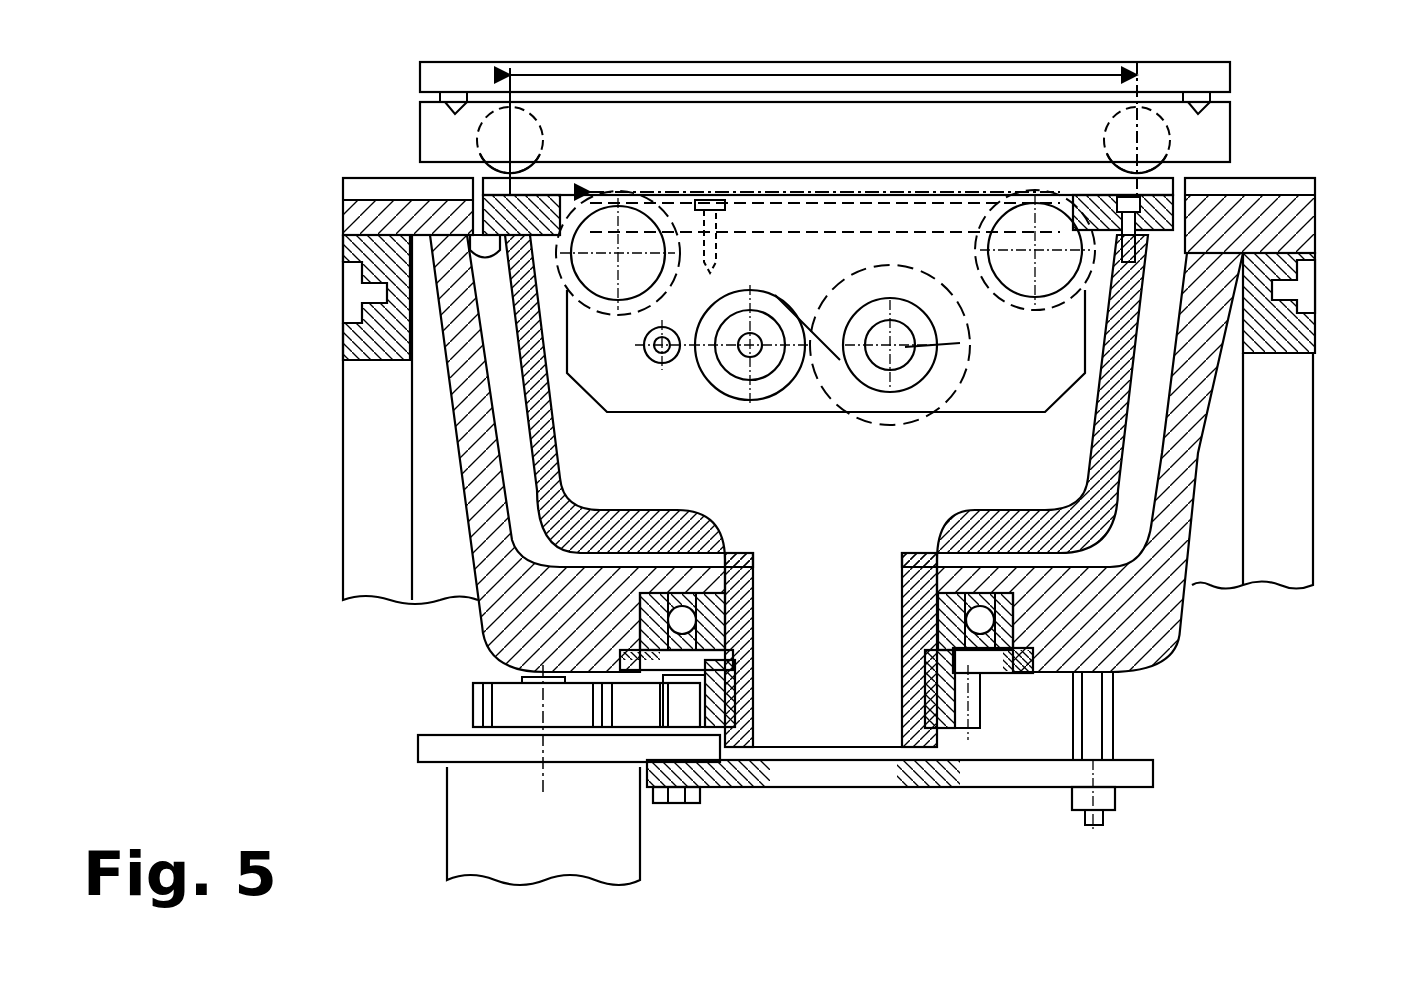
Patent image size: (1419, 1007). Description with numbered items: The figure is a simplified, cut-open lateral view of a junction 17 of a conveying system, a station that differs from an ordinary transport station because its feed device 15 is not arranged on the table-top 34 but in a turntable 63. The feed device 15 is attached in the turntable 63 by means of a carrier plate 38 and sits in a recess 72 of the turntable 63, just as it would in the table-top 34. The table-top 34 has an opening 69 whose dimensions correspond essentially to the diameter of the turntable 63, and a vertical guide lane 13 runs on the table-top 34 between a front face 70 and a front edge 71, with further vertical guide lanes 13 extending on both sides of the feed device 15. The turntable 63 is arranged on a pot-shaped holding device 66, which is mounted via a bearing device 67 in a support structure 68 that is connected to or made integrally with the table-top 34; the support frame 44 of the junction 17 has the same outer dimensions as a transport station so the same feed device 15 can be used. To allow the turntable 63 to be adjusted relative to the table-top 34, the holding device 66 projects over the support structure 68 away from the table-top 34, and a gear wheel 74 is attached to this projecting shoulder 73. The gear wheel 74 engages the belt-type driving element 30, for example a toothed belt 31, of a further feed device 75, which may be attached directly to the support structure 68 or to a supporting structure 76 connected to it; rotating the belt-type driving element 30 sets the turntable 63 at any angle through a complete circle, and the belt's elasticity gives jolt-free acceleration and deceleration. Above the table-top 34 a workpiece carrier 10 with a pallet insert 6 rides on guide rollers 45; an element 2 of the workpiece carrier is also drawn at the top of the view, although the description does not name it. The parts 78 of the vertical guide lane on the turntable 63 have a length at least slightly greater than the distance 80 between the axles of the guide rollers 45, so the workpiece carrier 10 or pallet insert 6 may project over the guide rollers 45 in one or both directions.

The pallet insert 6 is at (432, 72).
The workpiece carrier 10 is at (432, 128).
The carrier plate 2 is at (437, 150).
The vertical guide lane 13 is at (370, 192).
The table-top 34 is at (352, 205).
The turntable 63 is at (478, 237).
The front edge 71 is at (468, 258).
The support frame 44 is at (345, 345).
The front face 70 is at (345, 467).
The junction 17 is at (310, 575).
The toothed belt 31 is at (525, 680).
The belt-type driving element 30 is at (512, 693).
The further feed device 75 is at (437, 780).
The guide rollers 45 is at (530, 157).
The parts of the vertical guide lane 78 is at (705, 195).
The recess 72 is at (1070, 205).
The distance 80 is at (1097, 78).
The opening 69 is at (1205, 250).
The carrier plate 38 is at (1075, 487).
The feed device 15 is at (1075, 487).
The holding device 66 is at (1097, 528).
The support structure 68 is at (1110, 640).
The shoulder 73 is at (912, 648).
The gear wheel 74 is at (960, 740).
The bearing device 67 is at (1003, 685).
The supporting structure 76 is at (1140, 780).